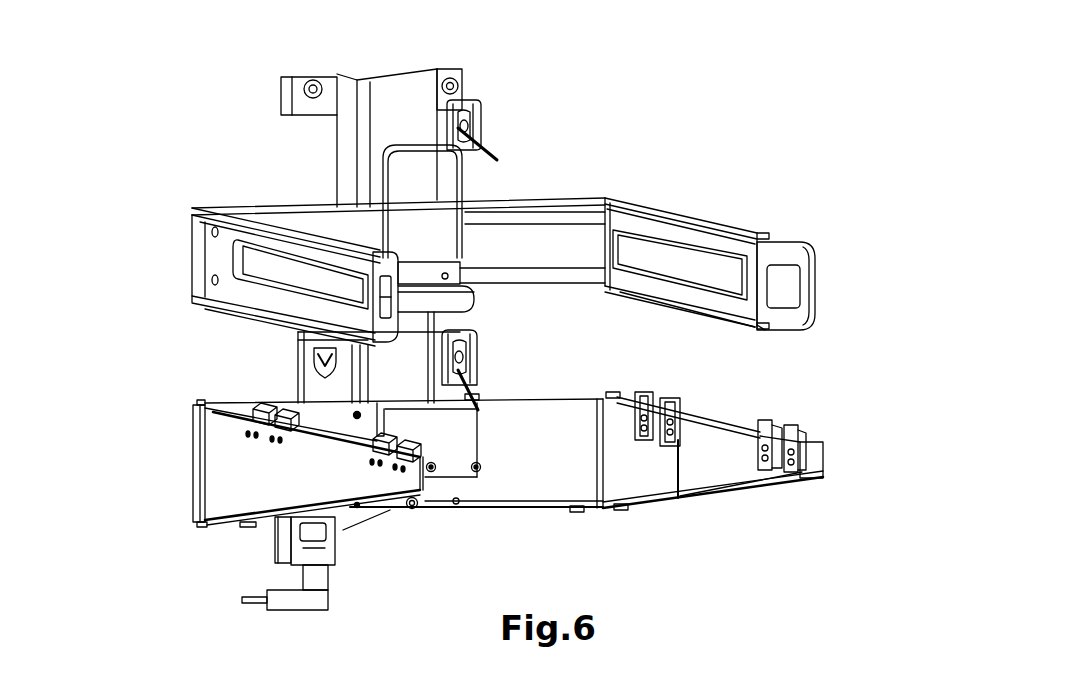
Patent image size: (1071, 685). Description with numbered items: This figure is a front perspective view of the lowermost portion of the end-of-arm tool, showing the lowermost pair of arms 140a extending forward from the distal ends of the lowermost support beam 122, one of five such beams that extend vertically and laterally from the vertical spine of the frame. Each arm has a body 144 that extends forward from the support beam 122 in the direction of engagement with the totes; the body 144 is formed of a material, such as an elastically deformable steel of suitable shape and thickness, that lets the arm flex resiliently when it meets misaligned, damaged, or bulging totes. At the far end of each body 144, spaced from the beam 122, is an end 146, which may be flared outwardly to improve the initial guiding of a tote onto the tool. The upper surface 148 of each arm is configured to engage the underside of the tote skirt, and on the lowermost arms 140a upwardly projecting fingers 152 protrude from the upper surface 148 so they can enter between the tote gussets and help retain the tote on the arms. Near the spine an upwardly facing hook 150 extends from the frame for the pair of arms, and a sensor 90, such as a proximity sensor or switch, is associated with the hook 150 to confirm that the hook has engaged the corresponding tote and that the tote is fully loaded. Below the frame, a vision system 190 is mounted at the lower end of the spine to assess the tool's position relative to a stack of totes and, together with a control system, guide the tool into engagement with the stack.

The support beam 122 is at (405, 90).
The sensor 90 is at (473, 102).
The upwardly facing hook 150 is at (457, 292).
The upper surface 148 is at (701, 211).
The end 146 is at (782, 247).
The body 144 is at (710, 307).
The finger 152 is at (797, 430).
The vision system 190 is at (350, 557).
The lowermost pair of arms 140a is at (149, 502).